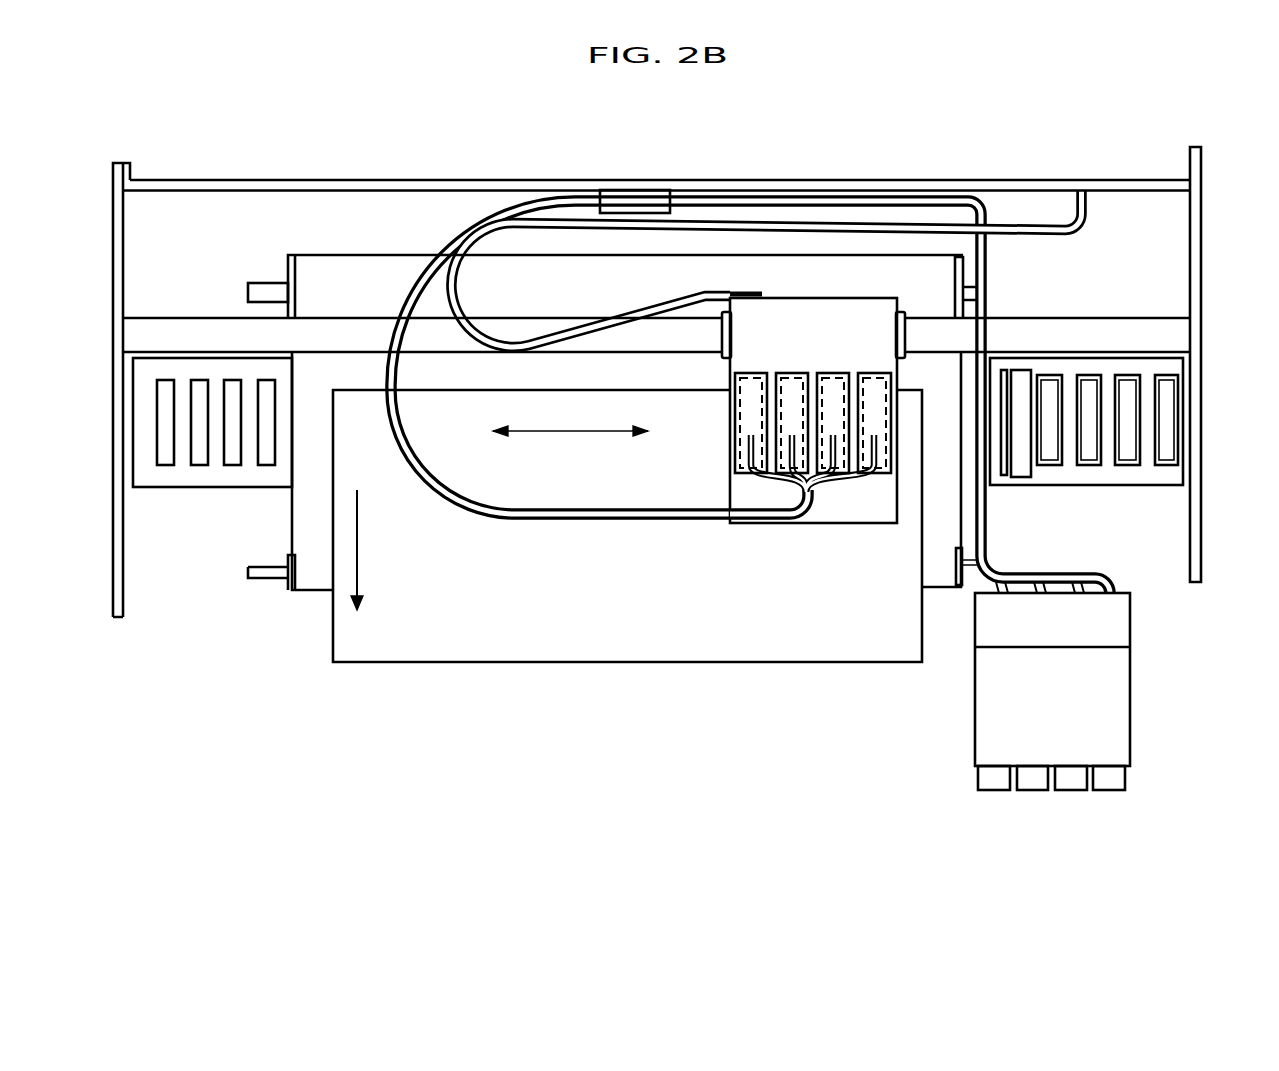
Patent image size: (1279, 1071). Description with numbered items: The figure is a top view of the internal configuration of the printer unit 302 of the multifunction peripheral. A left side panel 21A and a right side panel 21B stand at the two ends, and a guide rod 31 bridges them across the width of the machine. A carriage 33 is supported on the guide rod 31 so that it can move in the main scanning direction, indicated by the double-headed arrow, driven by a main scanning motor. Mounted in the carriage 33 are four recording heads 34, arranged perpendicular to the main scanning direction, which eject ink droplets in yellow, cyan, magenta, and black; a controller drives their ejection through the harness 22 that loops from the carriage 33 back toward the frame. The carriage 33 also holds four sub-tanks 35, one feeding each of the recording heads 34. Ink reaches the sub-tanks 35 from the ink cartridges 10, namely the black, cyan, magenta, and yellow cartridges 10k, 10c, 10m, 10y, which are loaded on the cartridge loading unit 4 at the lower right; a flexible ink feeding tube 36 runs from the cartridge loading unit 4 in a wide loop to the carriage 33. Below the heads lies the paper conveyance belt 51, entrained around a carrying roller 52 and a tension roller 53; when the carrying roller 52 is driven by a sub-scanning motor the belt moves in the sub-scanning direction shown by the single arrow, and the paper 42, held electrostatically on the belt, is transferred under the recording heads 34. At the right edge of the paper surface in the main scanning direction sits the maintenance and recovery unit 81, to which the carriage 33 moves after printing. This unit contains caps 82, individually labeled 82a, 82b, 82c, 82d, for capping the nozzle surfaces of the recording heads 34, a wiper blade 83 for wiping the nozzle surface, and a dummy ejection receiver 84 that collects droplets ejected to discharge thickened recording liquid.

The image forming apparatus 302 is at (160, 130).
The left side panel 21A is at (113, 236).
The right side panel 21B is at (1202, 235).
The harness 22 is at (822, 232).
The ink feeding tube 36 is at (443, 240).
The paper conveyance belt 51 is at (345, 258).
The carrying roller 52 is at (964, 264).
The tension roller 53 is at (288, 585).
The guide rod 31 is at (190, 326).
The carriage 33 is at (874, 522).
The recording heads 34 is at (755, 378).
The sub-tanks 35 is at (768, 478).
The paper 42 is at (525, 640).
The maintenance and recovery unit 81 is at (1128, 424).
The caps 82 is at (1106, 470).
The cap 82a is at (1042, 468).
The cap 82b is at (1084, 468).
The cap 82c is at (1126, 468).
The cap 82d is at (1172, 451).
The wiper blade 83 is at (1004, 372).
The dummy ejection receiver 84 is at (1021, 375).
The cartridge loading unit 4 is at (1089, 748).
The ink cartridges 10 is at (1051, 834).
The ink cartridge 10k is at (995, 790).
The ink cartridge 10c is at (1033, 790).
The ink cartridge 10m is at (1071, 790).
The ink cartridge 10y is at (1112, 815).